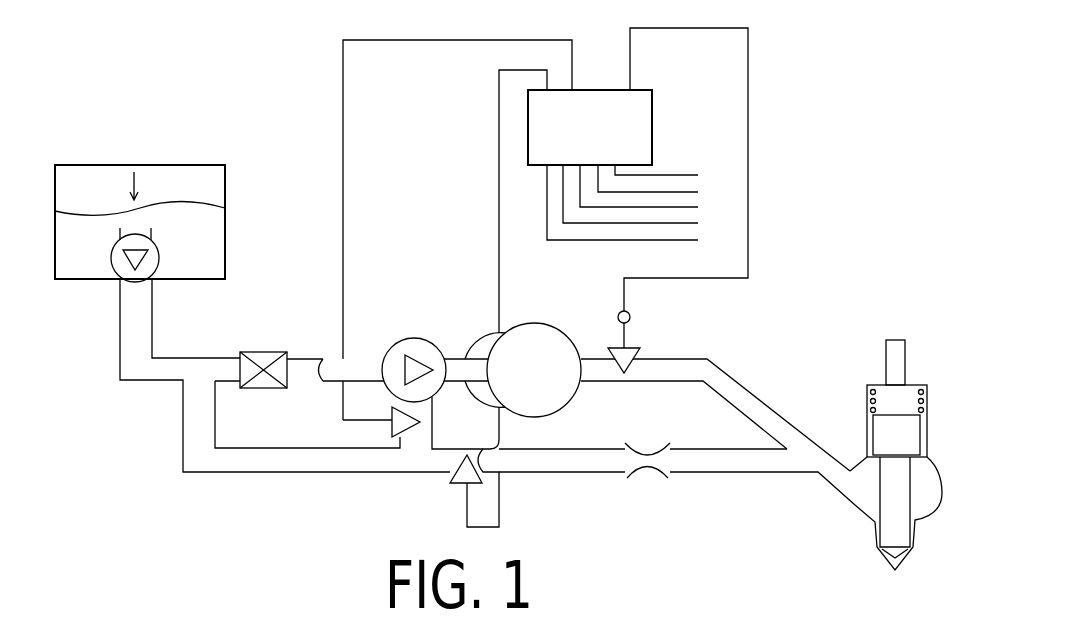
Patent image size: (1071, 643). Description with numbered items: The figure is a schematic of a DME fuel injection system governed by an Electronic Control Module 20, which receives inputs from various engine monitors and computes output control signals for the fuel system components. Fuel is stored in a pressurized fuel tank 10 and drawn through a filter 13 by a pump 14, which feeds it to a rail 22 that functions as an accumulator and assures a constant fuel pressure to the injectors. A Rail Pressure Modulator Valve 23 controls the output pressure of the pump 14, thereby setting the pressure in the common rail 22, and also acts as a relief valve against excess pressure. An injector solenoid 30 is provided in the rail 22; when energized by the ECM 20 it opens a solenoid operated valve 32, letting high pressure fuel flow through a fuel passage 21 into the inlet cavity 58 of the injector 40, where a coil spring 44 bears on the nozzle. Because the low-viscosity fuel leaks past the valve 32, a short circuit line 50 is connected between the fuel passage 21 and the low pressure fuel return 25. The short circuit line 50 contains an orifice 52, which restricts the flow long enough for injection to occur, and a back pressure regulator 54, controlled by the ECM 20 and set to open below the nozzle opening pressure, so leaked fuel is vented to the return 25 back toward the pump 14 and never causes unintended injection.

The pressurized fuel tank 10 is at (225, 230).
The fuel filter 13 is at (263, 352).
The pump 14 is at (420, 340).
The electronic control module 20 is at (652, 113).
The fuel passage 21 is at (743, 393).
The rail 22 is at (535, 337).
The rail pressure modulator valve 23 is at (392, 424).
The low pressure fuel return 25 is at (197, 423).
The solenoid 30 is at (630, 315).
The solenoid operated valve 32 is at (632, 355).
The injector 40 is at (863, 515).
The coil spring 44 is at (866, 392).
The short circuit line 50 is at (578, 462).
The orifice 52 is at (647, 472).
The back pressure regulator 54 is at (458, 480).
The inlet cavity 58 is at (860, 487).